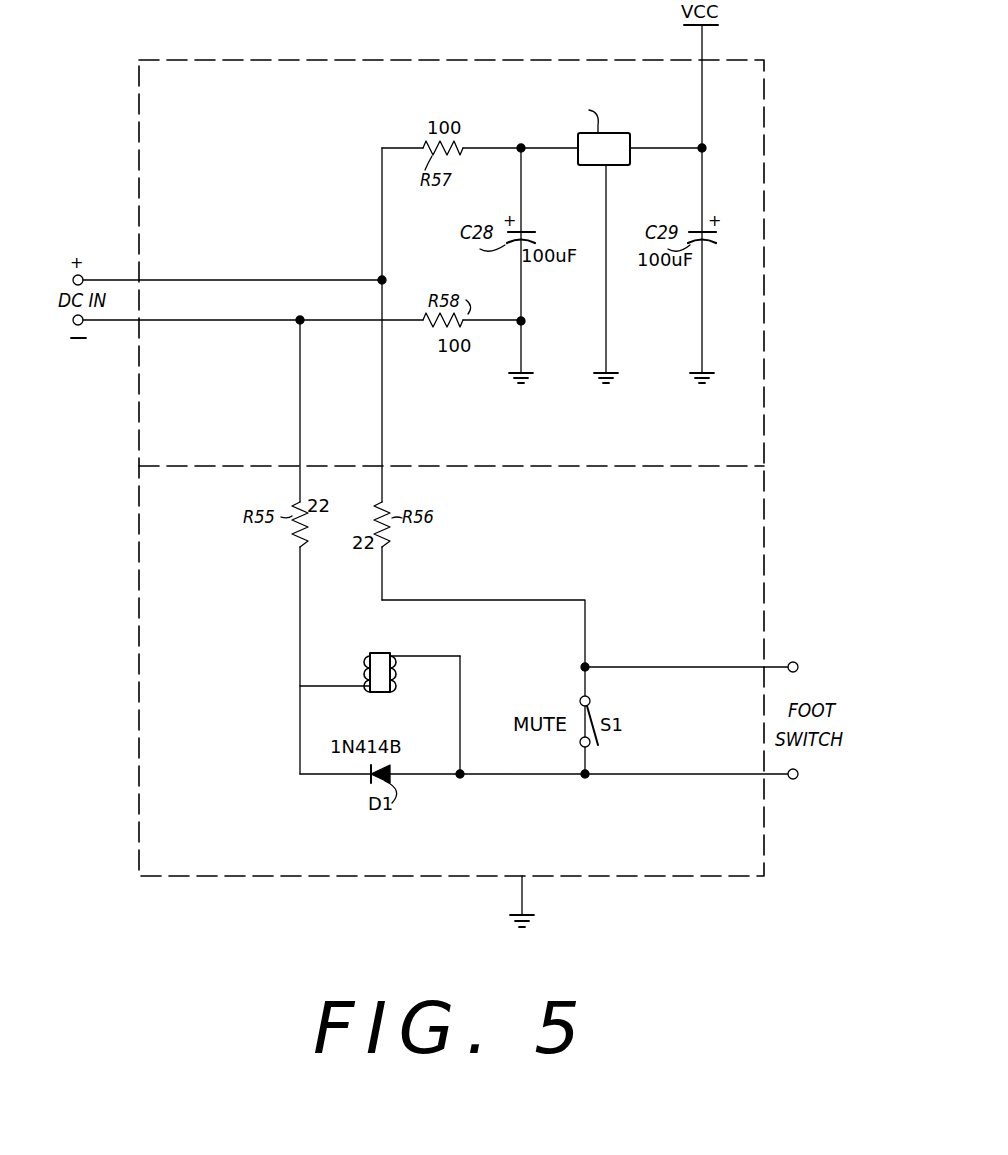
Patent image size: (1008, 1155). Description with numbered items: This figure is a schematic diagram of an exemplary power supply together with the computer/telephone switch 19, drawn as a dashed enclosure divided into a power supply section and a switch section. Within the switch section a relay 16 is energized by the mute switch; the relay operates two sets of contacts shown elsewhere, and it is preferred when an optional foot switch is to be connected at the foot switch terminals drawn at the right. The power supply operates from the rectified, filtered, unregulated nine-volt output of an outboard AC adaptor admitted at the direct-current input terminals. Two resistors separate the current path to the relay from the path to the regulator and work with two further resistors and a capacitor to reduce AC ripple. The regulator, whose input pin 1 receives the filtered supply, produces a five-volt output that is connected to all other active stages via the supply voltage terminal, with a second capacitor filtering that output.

The computer/telephone switch unit 19 is at (765, 602).
The relay 16 is at (380, 713).
The voltage regulator U1 (pin 1) 1 is at (631, 238).